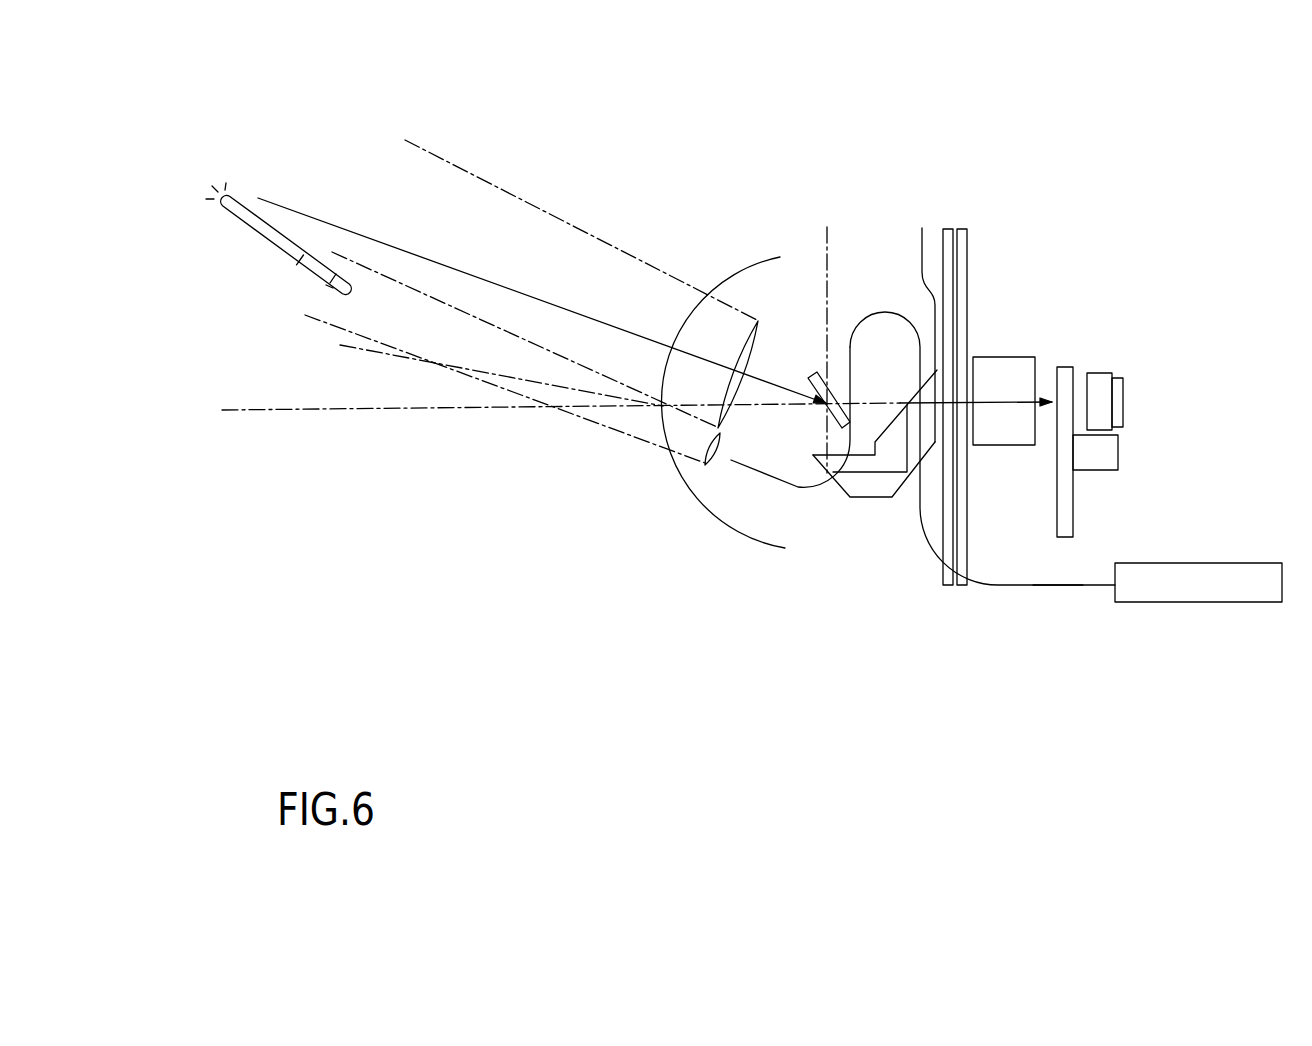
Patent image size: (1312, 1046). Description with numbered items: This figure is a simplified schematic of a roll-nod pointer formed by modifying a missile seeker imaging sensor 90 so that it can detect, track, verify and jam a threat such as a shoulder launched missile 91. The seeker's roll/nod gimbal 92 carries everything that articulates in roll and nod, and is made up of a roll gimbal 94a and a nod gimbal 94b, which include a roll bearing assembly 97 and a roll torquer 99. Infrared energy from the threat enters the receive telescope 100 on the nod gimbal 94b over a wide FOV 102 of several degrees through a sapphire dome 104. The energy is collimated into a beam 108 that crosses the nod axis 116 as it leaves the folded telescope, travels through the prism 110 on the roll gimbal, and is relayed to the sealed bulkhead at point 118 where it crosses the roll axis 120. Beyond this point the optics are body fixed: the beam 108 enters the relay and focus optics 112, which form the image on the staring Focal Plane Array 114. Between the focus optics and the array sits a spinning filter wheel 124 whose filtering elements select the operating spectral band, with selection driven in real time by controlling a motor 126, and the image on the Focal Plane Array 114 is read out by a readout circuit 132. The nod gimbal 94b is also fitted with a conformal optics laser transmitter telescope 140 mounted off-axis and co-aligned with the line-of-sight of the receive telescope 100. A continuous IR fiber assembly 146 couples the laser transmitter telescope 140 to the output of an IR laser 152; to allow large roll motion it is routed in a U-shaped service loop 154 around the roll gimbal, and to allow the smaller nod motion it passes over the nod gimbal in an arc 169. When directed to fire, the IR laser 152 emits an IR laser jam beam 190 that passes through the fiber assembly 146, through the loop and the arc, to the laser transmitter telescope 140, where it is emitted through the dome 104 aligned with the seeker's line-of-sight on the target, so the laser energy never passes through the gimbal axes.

The AIM-9X Imaging sensor 90 is at (571, 647).
The shoulder launched missile 91 is at (282, 253).
The roll/nod gimbal 92 is at (973, 706).
The roll gimbal 94a is at (973, 617).
The nod gimbal 94b is at (850, 617).
The roll bearing assembly 97 is at (963, 228).
The roll torquer 99 is at (947, 228).
The receive telescope 100 is at (738, 340).
The wide FOV 102 is at (510, 192).
The dome 104 is at (700, 508).
The beam 108 is at (791, 378).
The prism 110 is at (871, 497).
The relay and focus optics 112 is at (1003, 358).
The Focal Plane Array 114 is at (1103, 372).
The nod axis 116 is at (827, 222).
The point 118 is at (931, 321).
The roll axis 120 is at (394, 410).
The spinning filter wheel 124 is at (1070, 367).
The motor 126 is at (1120, 453).
The readout circuit 132 is at (1125, 397).
The laser transmitter telescope 140 is at (731, 460).
The IR fiber assembly 146 is at (1083, 585).
The IR laser 152 is at (1200, 602).
The U-shaped service loop 154 is at (920, 307).
The arc 169 is at (800, 490).
The IR laser jam beam 190 is at (578, 417).